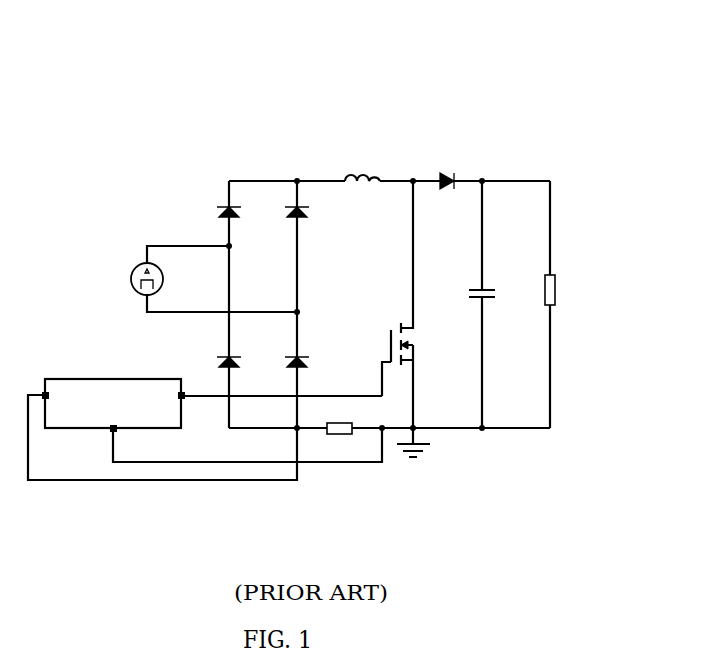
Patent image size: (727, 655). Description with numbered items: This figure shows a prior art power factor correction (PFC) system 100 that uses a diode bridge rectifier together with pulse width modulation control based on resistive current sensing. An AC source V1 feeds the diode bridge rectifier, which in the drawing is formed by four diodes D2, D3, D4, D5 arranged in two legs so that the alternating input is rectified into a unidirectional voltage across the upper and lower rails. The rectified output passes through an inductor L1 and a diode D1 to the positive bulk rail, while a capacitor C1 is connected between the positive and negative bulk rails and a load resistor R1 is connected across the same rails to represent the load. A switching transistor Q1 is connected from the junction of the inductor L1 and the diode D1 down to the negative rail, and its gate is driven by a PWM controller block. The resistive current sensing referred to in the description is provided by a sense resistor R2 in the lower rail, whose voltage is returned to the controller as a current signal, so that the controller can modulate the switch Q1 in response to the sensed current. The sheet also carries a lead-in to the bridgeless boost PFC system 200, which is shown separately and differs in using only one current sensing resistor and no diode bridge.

The power factor correction (PFC) system 100 is at (357, 264).
The bridgeless boost power factor correction (PFC) system 200 is at (609, 654).
The boost inductor L1 is at (362, 199).
The boost diode D1 is at (451, 198).
The bridge rectifier diode D2 is at (217, 211).
The bridge rectifier diode D3 is at (286, 228).
The bridge rectifier diode D4 is at (214, 361).
The bridge rectifier diode D5 is at (314, 363).
The load resistor R1 is at (567, 282).
The current sense resistor R2 is at (341, 441).
The bulk capacitor C1 is at (495, 304).
The switching transistor Q1 is at (421, 304).
The AC source V1 is at (130, 270).